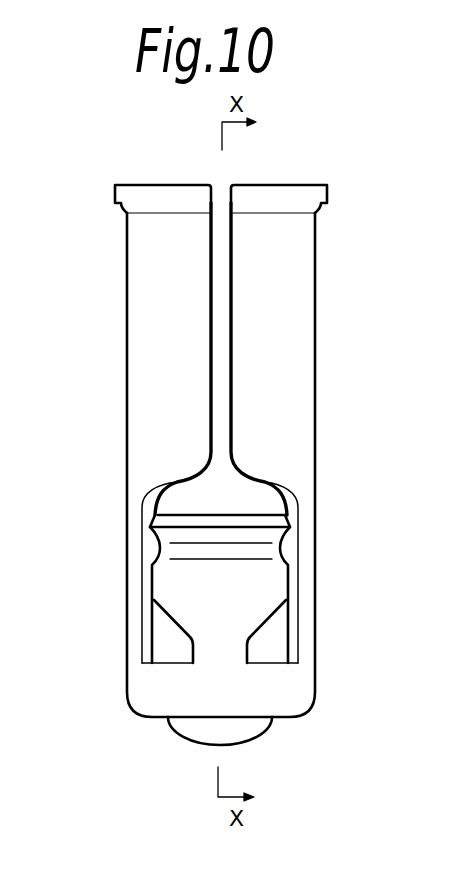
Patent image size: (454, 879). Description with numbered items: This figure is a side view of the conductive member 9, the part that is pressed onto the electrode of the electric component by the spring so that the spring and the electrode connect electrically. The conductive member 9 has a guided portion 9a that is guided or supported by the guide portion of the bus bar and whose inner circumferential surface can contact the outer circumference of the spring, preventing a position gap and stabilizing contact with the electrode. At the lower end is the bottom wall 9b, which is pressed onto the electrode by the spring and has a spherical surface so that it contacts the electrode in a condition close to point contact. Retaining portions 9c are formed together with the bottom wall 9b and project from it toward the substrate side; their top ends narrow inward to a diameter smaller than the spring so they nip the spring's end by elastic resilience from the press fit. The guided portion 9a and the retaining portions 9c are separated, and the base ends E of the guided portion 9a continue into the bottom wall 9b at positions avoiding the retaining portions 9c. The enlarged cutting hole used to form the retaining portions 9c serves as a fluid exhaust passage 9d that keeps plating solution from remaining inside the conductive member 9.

The conductive member 9 is at (319, 403).
The guided portion 9a is at (317, 300).
The bottom wall 9b is at (237, 733).
The retaining portions 9c is at (273, 587).
The fluid exhaust passage 9d is at (222, 353).
The base ends E is at (220, 665).